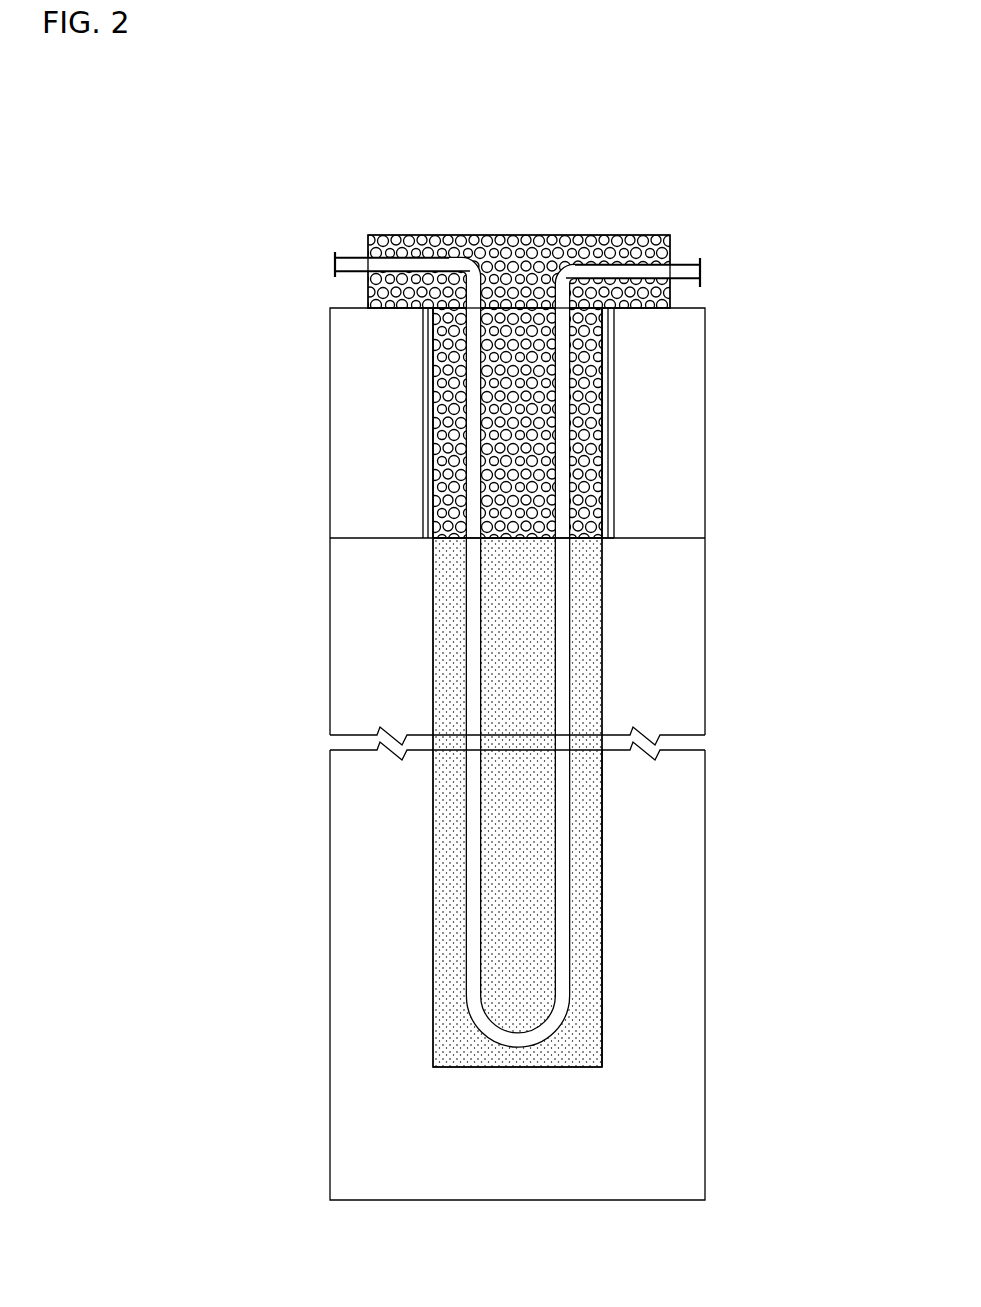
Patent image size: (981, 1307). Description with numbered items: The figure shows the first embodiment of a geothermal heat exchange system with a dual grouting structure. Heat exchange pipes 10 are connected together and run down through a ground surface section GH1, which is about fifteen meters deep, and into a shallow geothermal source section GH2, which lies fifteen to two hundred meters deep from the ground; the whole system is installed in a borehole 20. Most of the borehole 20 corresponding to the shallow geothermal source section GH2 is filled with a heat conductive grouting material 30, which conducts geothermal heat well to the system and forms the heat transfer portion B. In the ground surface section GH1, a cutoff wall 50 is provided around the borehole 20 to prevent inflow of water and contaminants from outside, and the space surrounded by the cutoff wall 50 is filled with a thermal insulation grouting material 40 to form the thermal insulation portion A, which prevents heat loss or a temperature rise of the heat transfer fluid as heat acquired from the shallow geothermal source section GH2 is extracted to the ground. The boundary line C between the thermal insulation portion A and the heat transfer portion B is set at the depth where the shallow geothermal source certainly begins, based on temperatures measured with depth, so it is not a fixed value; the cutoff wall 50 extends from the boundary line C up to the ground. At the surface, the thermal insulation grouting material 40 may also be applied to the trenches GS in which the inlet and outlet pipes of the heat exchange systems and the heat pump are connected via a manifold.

The heat exchange pipe 10 is at (563, 647).
The borehole 20 is at (606, 382).
The heat conductive grouting material 30 is at (515, 680).
The thermal insulation grouting material 40 is at (468, 377).
The cutoff wall 50 is at (428, 498).
The trench GS is at (524, 245).
The ground surface section GH1 is at (360, 443).
The shallow geothermal source section GH2 is at (360, 862).
The thermal insulation portion A is at (614, 455).
The heat transfer portion B is at (587, 835).
The boundary line C is at (614, 538).